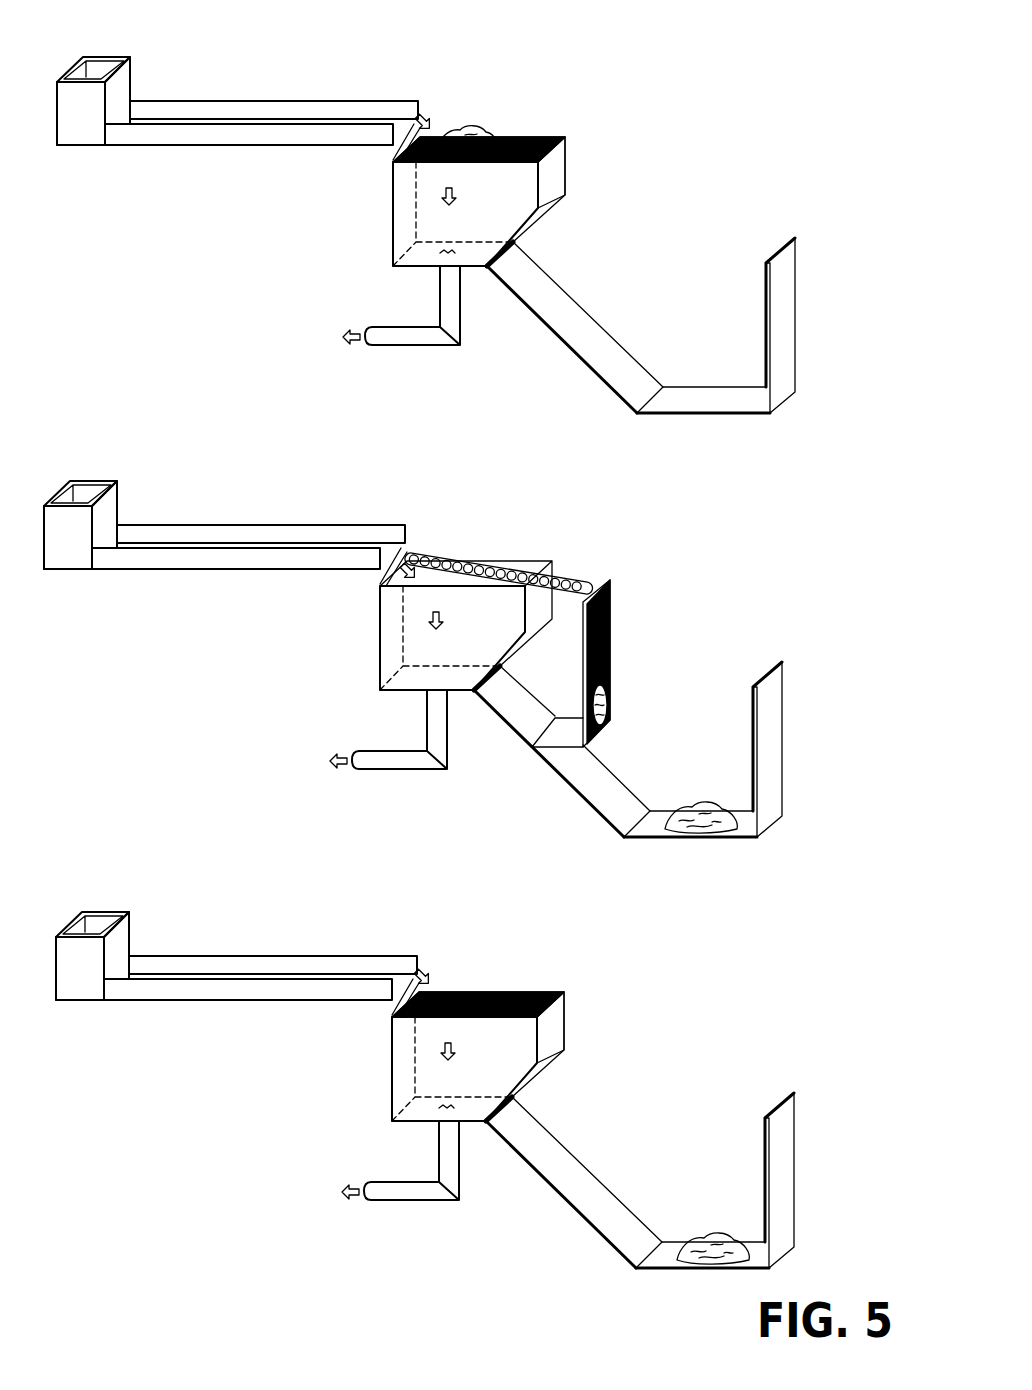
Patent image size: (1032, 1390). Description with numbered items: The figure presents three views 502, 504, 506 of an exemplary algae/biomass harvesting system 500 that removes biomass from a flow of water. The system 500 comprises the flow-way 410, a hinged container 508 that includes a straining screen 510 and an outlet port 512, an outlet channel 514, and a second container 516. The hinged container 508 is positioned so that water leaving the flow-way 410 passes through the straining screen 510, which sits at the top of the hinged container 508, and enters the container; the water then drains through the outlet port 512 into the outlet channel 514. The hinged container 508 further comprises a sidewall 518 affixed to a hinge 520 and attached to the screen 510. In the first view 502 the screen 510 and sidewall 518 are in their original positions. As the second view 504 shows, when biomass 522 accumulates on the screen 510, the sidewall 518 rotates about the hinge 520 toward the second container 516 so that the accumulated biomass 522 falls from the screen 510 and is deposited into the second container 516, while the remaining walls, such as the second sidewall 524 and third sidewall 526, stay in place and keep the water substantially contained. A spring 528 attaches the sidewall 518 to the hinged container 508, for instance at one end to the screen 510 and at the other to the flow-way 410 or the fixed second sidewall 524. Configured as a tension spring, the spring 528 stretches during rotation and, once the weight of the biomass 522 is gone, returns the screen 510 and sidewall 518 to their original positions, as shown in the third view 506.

The algae/biomass harvesting system 500 is at (474, 635).
The first view 502 is at (444, 29).
The second view 504 is at (444, 474).
The third view 506 is at (444, 899).
The flow-way 410 is at (237, 148).
The hinged container 508 is at (390, 203).
The straining screen 510 is at (540, 137).
The outlet port 512 is at (445, 253).
The outlet channel 514 is at (392, 332).
The second container 516 is at (785, 327).
The sidewall 518 is at (548, 183).
The hinge 520 is at (485, 267).
The biomass 522 is at (473, 127).
The second sidewall 524 is at (387, 628).
The third sidewall 526 is at (511, 529).
The spring 528 is at (453, 560).